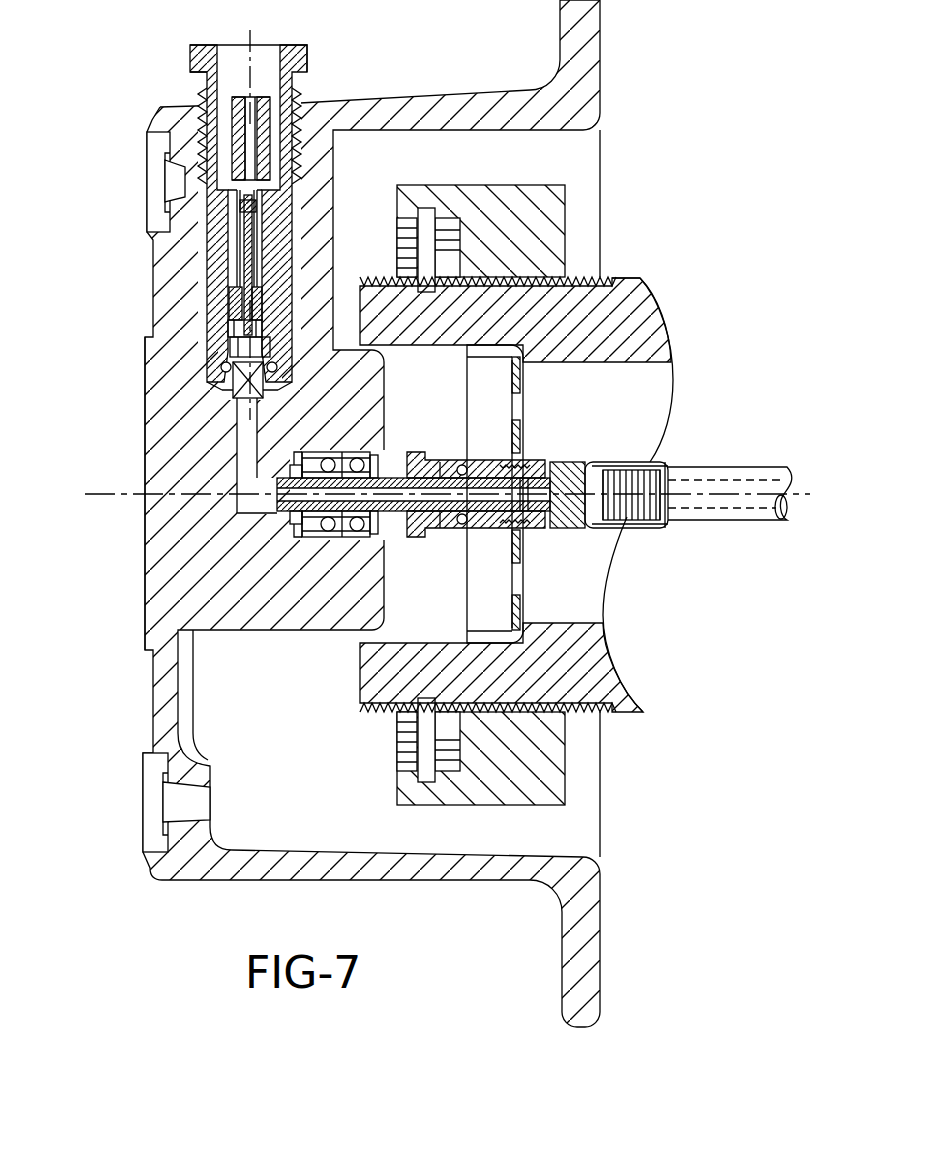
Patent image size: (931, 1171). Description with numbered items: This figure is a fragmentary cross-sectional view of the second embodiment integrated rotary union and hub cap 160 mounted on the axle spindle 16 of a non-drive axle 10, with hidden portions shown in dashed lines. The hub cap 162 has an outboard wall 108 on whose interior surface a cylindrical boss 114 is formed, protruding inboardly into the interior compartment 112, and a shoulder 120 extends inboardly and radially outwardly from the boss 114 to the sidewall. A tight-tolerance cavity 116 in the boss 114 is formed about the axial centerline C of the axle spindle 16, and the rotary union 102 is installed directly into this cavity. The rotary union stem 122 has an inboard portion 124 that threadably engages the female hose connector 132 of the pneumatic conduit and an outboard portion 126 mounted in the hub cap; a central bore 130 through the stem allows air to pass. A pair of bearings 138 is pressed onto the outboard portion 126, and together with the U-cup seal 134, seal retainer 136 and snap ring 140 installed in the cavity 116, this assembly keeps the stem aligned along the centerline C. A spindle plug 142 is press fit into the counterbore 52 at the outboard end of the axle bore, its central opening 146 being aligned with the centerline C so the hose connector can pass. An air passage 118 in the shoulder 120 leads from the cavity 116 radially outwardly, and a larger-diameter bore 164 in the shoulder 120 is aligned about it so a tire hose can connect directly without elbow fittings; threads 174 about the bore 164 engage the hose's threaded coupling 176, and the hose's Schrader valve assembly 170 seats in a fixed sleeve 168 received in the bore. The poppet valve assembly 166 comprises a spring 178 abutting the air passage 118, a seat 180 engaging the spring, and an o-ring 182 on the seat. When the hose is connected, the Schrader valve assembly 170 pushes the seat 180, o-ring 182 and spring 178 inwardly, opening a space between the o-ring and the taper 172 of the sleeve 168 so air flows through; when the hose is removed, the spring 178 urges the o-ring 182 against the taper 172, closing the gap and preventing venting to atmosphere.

The axle 10 is at (630, 273).
The axle spindle 16 is at (612, 276).
The counterbore 52 is at (397, 350).
The rotary union 102 is at (435, 445).
The outboard wall 108 is at (160, 708).
The interior compartment 112 is at (398, 245).
The boss 114 is at (247, 620).
The cavity 116 is at (348, 455).
The air passage 118 is at (240, 445).
The shoulder 120 is at (320, 175).
The rotary union stem 122 is at (415, 450).
The inboard portion 124 is at (500, 527).
The outboard portion 126 is at (288, 517).
The central bore 130 is at (540, 487).
The female hose connector 132 is at (545, 532).
The U-cup seal 134 is at (292, 522).
The seal retainer 136 is at (302, 528).
The bearings 138 is at (357, 530).
The snap ring 140 is at (375, 532).
The spindle plug 142 is at (526, 372).
The central opening 146 is at (522, 468).
The second embodiment integrated rotary union and hub cap 160 is at (118, 98).
The hub cap 162 is at (140, 351).
The bore 164 is at (280, 240).
The poppet valve assembly 166 is at (222, 397).
The sleeve 168 is at (212, 302).
The Schrader valve assembly 170 is at (228, 262).
The taper 172 is at (222, 383).
The threads 174 is at (298, 128).
The threaded coupling 176 is at (290, 45).
The spring 178 is at (265, 388).
The seat 180 is at (274, 384).
The o-ring 182 is at (280, 367).
The axial centerline C is at (108, 496).